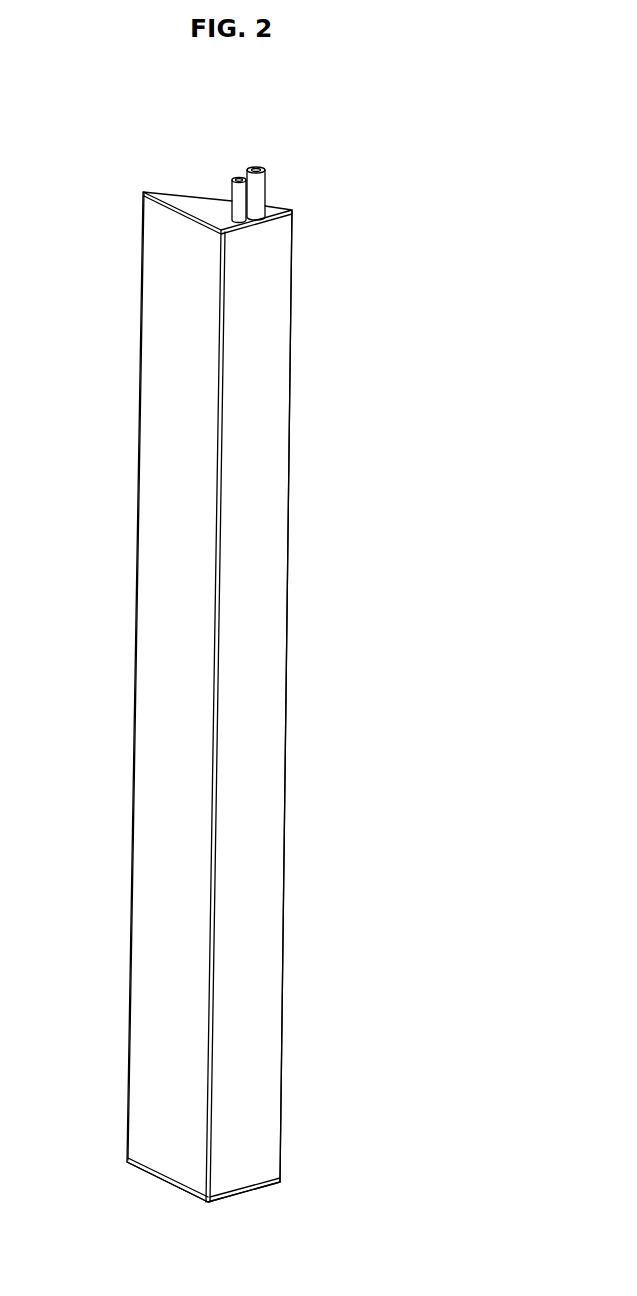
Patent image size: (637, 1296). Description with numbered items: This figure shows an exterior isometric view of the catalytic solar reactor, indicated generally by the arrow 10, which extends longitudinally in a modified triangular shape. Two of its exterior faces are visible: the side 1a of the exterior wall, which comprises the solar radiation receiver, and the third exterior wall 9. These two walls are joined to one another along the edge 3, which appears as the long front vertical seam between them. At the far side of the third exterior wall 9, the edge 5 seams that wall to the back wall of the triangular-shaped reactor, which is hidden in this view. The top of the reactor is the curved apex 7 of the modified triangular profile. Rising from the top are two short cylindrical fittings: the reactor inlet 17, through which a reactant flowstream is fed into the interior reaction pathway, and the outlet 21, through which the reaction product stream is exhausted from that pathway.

The battery cell 10 is at (421, 215).
The side of exterior wall 1a is at (185, 688).
The edge 3 is at (222, 495).
The edge 5 is at (290, 383).
The curved apex 7 is at (145, 193).
The third exterior wall 9 is at (252, 537).
The reactor inlet 17 is at (237, 177).
The outlet 21 is at (253, 170).